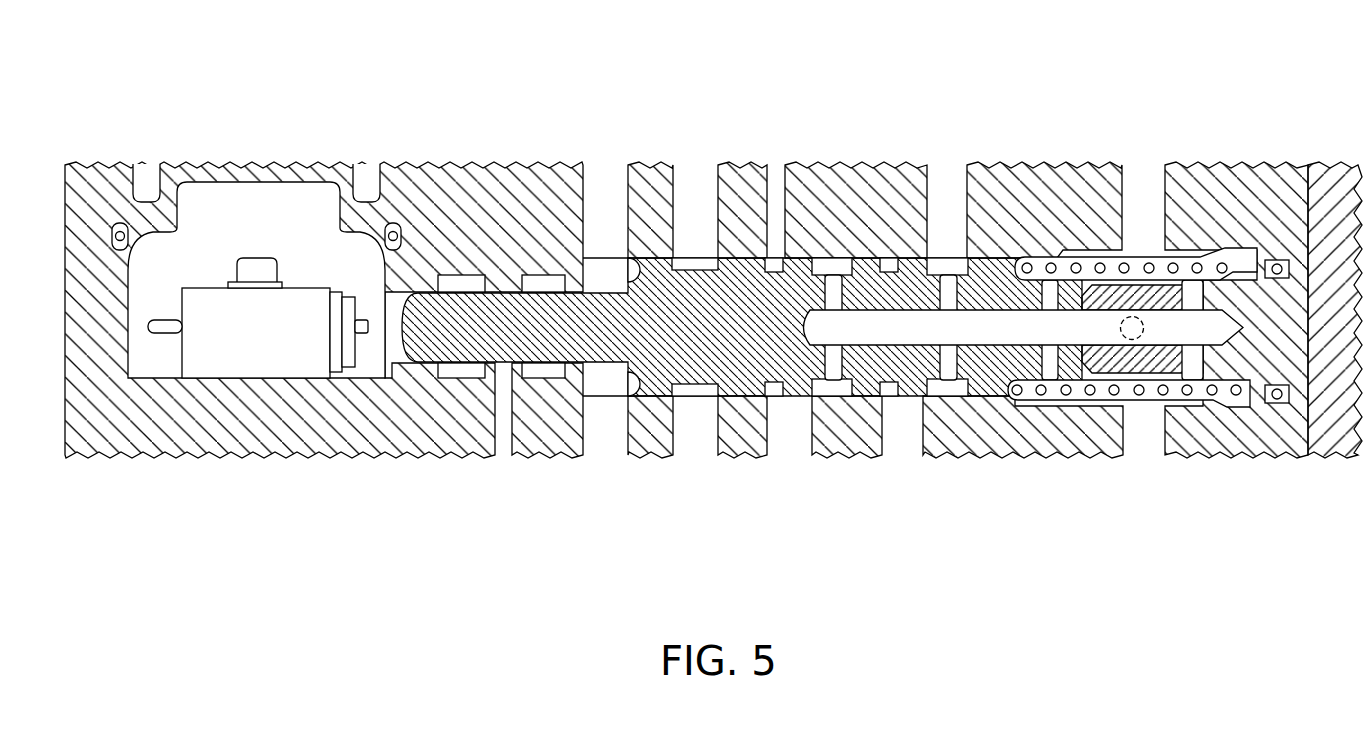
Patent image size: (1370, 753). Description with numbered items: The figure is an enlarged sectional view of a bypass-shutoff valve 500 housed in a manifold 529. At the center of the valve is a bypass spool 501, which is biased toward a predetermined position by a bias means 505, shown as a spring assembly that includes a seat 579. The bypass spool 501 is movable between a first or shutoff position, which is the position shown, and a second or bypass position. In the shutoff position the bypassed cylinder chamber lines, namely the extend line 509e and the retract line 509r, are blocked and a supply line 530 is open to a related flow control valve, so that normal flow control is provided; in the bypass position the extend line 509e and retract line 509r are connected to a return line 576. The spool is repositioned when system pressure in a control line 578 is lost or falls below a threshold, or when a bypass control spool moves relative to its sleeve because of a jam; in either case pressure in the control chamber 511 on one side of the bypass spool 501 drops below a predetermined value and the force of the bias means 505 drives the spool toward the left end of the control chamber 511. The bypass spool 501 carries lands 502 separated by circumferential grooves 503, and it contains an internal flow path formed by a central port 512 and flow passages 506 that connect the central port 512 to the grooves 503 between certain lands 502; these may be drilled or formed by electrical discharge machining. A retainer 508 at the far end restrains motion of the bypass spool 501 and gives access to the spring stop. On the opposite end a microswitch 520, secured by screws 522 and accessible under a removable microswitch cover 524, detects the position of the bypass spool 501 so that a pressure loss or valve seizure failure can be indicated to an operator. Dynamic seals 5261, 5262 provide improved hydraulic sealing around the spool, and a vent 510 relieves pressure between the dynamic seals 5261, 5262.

The bypass-shutoff valve 500 is at (605, 576).
The bypass spool 501 is at (750, 339).
The lands 502 is at (663, 262).
The circumferential grooves 503 is at (771, 262).
The bias means 505 is at (1097, 265).
The flow passages 506 is at (1192, 287).
The retainer 508 is at (1337, 455).
The extend line 509e is at (794, 450).
The retract line 509r is at (904, 450).
The vent 510 is at (503, 455).
The control chamber 511 is at (605, 375).
The central port 512 is at (920, 341).
The microswitch 520 is at (313, 366).
The screws 522 is at (240, 290).
The microswitch cover 524 is at (246, 165).
The dynamic seal 5261 is at (456, 275).
The dynamic seal 5262 is at (540, 275).
The manifold 529 is at (188, 455).
The supply line 530 is at (692, 178).
The return line 576 is at (962, 178).
The control line 578 is at (603, 178).
The seat 579 is at (1247, 268).